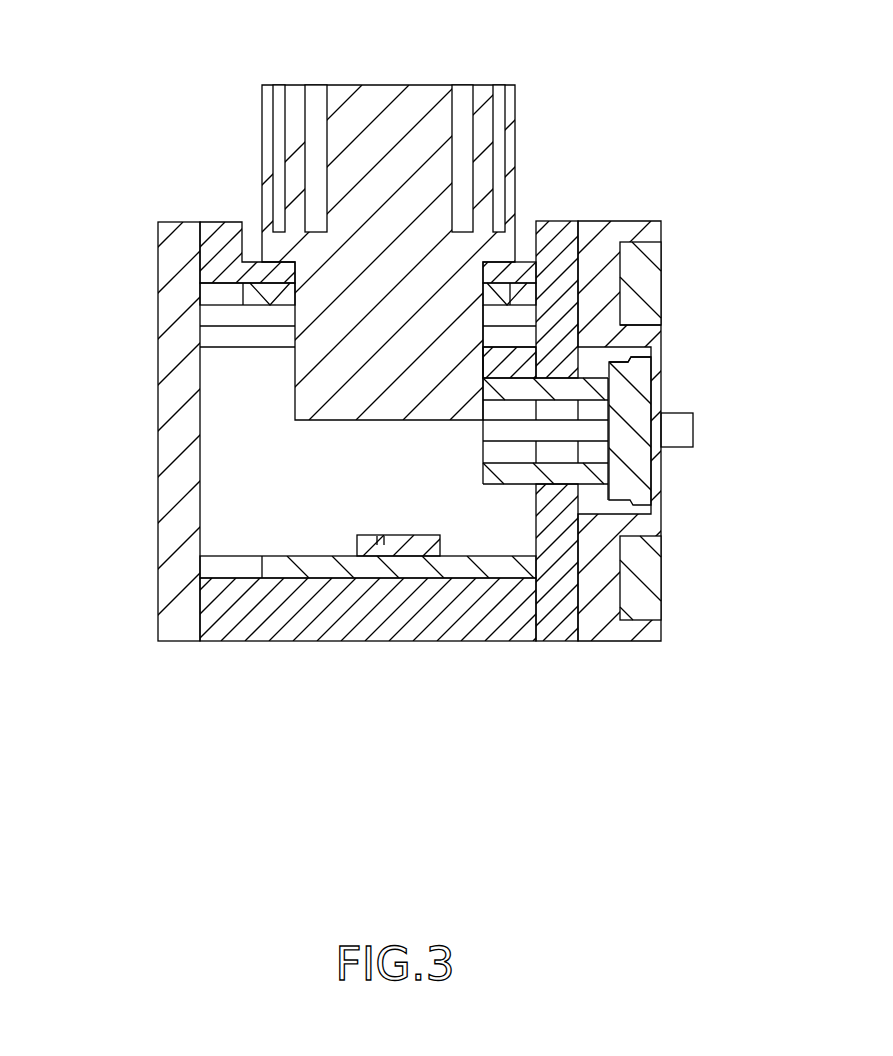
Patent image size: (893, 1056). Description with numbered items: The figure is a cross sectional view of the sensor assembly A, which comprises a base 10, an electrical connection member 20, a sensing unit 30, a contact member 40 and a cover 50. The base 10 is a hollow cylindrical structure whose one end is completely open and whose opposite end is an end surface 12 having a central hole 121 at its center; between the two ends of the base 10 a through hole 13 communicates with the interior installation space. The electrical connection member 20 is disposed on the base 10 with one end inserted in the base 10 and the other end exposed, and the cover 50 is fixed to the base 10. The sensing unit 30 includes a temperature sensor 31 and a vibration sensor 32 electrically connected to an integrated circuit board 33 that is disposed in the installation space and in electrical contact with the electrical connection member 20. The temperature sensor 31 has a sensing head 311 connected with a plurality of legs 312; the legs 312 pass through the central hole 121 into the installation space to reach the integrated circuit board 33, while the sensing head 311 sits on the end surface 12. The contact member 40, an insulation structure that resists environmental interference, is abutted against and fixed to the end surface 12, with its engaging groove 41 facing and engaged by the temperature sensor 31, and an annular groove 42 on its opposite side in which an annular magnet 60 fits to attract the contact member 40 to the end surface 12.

The sensor assembly A is at (142, 143).
The base 10 is at (550, 215).
The end surface 12 is at (576, 276).
The through hole 13 is at (292, 277).
The electrical connection member 20 is at (520, 105).
The sensing unit 30 is at (430, 580).
The temperature sensor 31 is at (571, 553).
The sensing head 311 is at (632, 480).
The legs 312 is at (563, 472).
The vibration sensor 32 is at (435, 544).
The integrated circuit board 33 is at (368, 652).
The contact member 40 is at (646, 215).
The engaging groove 41 is at (620, 325).
The annular groove 42 is at (643, 537).
The cover 50 is at (155, 310).
The annular magnet 60 is at (648, 272).
The central hole 121 is at (558, 375).